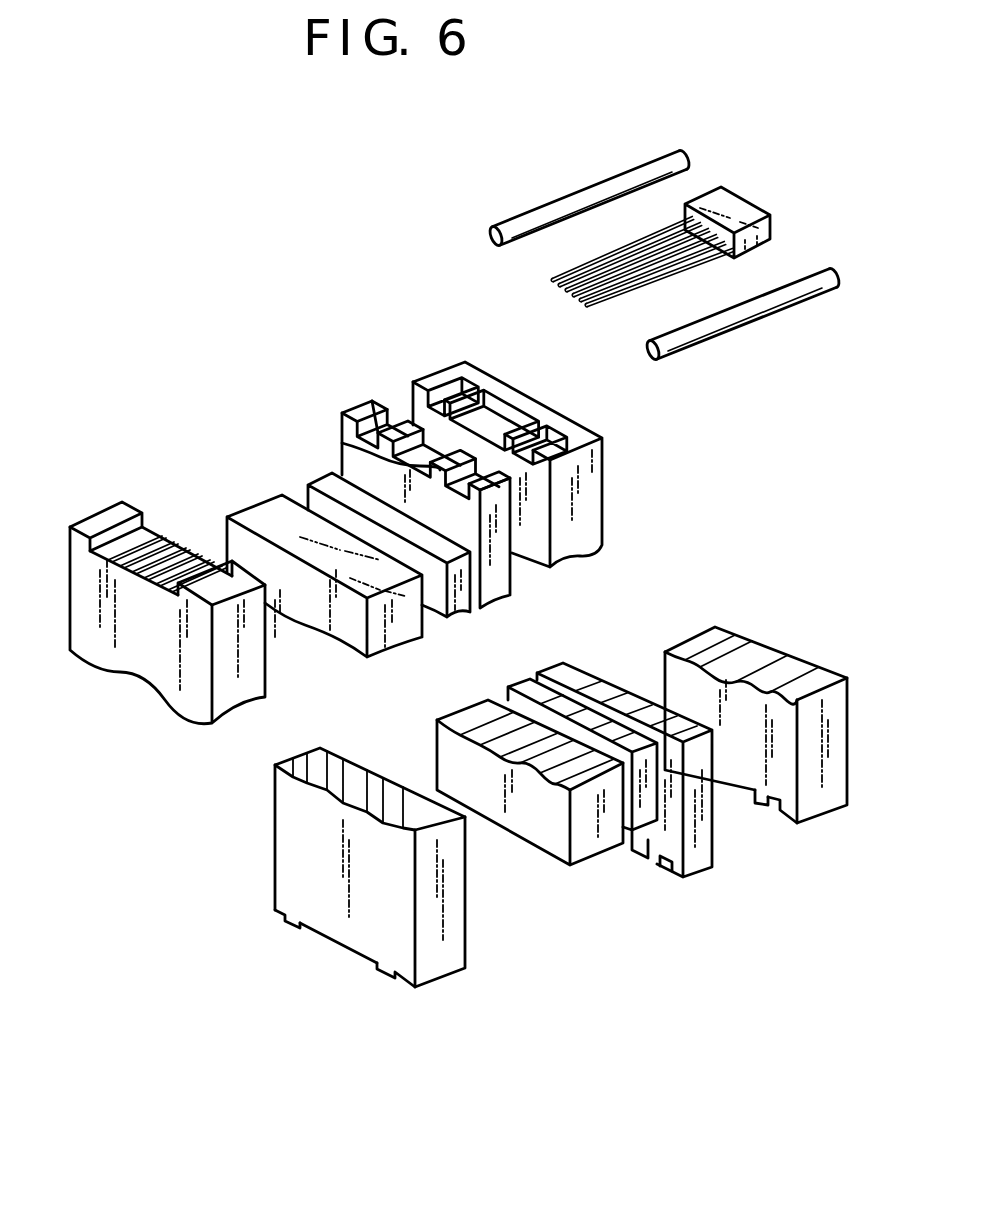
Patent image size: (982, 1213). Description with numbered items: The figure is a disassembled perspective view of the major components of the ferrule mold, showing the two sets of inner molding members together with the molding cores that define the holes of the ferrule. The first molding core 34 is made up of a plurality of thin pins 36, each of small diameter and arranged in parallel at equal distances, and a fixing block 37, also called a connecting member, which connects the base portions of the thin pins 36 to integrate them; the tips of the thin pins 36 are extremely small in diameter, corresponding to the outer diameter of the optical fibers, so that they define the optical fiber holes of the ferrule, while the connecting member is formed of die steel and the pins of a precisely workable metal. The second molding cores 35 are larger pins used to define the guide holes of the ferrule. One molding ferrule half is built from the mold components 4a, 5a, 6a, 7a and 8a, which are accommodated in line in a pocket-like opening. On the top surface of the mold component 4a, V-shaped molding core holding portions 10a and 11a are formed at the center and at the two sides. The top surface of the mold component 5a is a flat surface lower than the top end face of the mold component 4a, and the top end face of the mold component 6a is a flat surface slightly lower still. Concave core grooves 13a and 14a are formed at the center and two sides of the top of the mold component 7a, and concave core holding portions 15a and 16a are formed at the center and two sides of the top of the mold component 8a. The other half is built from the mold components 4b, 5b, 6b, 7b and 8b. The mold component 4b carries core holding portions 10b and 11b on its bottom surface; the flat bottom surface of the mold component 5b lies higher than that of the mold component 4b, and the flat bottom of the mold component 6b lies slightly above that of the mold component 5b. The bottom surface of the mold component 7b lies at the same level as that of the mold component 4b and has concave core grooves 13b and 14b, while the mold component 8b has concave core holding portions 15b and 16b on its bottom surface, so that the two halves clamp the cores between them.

The mold component 4a is at (173, 680).
The mold component 4b is at (448, 975).
The mold component 5a is at (342, 630).
The mold component 5b is at (582, 863).
The mold component 6a is at (458, 603).
The mold component 6b is at (665, 818).
The mold component 7a is at (500, 568).
The mold component 7b is at (707, 870).
The mold component 8a is at (607, 487).
The mold component 8b is at (840, 810).
The V-shaped molding core holding portion 10a is at (210, 564).
The core holding portion 10b is at (343, 948).
The V-shaped molding core holding portion 11a is at (103, 533).
The core holding portion 11b is at (285, 915).
The concave core groove 13a is at (342, 442).
The concave core groove 13b is at (630, 845).
The concave core groove 14a is at (367, 423).
The concave core groove 14b is at (660, 852).
The concave core holding portion 15a is at (503, 433).
The concave core holding portion 15b is at (745, 792).
The concave core holding portion 16a is at (440, 387).
The concave core holding portion 16b is at (777, 805).
The first molding core 34 is at (742, 190).
The second molding core 35 is at (560, 205).
The thin pin 36 is at (635, 252).
The fixing block 37 is at (762, 211).